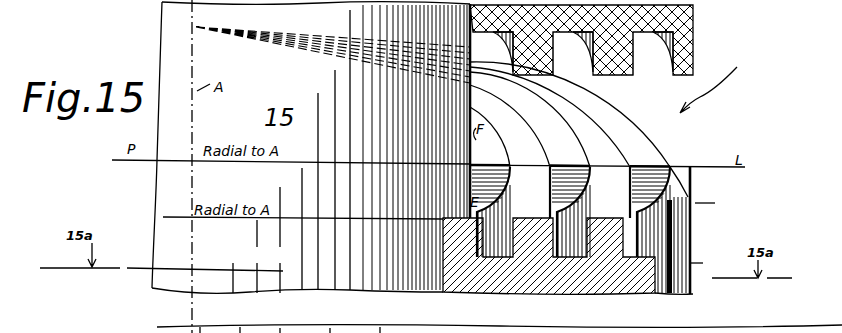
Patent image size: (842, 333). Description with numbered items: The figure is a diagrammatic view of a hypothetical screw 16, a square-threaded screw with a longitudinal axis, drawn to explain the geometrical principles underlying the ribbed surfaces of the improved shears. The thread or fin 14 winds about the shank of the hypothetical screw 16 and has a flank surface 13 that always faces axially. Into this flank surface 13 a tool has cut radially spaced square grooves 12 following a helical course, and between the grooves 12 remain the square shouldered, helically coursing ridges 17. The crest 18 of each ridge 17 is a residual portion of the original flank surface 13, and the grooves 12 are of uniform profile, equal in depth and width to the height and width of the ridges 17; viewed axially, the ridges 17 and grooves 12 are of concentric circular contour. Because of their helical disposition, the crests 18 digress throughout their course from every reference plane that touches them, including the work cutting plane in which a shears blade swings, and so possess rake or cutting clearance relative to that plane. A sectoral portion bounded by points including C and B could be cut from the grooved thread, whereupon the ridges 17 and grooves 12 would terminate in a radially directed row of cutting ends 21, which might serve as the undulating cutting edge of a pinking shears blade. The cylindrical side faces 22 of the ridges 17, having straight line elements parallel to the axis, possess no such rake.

The grooves 12 is at (477, 300).
The flank surface 13 is at (500, 163).
The thread or fin 14 is at (675, 250).
The hypothetical screw 16 is at (716, 85).
The ridges 17 is at (610, 237).
The crest 18 is at (643, 164).
The cutting ends 21 is at (665, 160).
The cylindrical side faces 22 is at (673, 193).
The point C is at (711, 205).
The point B is at (702, 265).